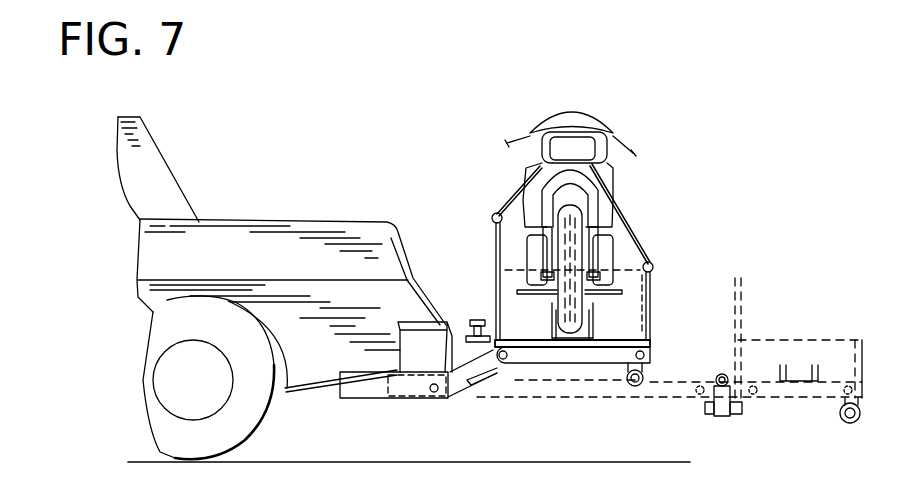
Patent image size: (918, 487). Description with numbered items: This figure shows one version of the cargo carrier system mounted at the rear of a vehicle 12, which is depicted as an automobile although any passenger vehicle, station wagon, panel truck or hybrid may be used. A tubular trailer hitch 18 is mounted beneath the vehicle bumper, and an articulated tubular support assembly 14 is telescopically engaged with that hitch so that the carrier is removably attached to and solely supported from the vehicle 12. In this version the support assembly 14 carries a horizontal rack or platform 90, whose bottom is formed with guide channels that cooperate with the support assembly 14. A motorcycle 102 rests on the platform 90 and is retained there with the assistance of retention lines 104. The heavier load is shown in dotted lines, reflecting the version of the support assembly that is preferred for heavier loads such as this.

The vehicle 12 is at (287, 233).
The support assembly 14 is at (477, 372).
The trailer hitch 18 is at (366, 392).
The platform 90 is at (558, 357).
The motorcycle 102 is at (615, 171).
The retention lines 104 is at (507, 203).